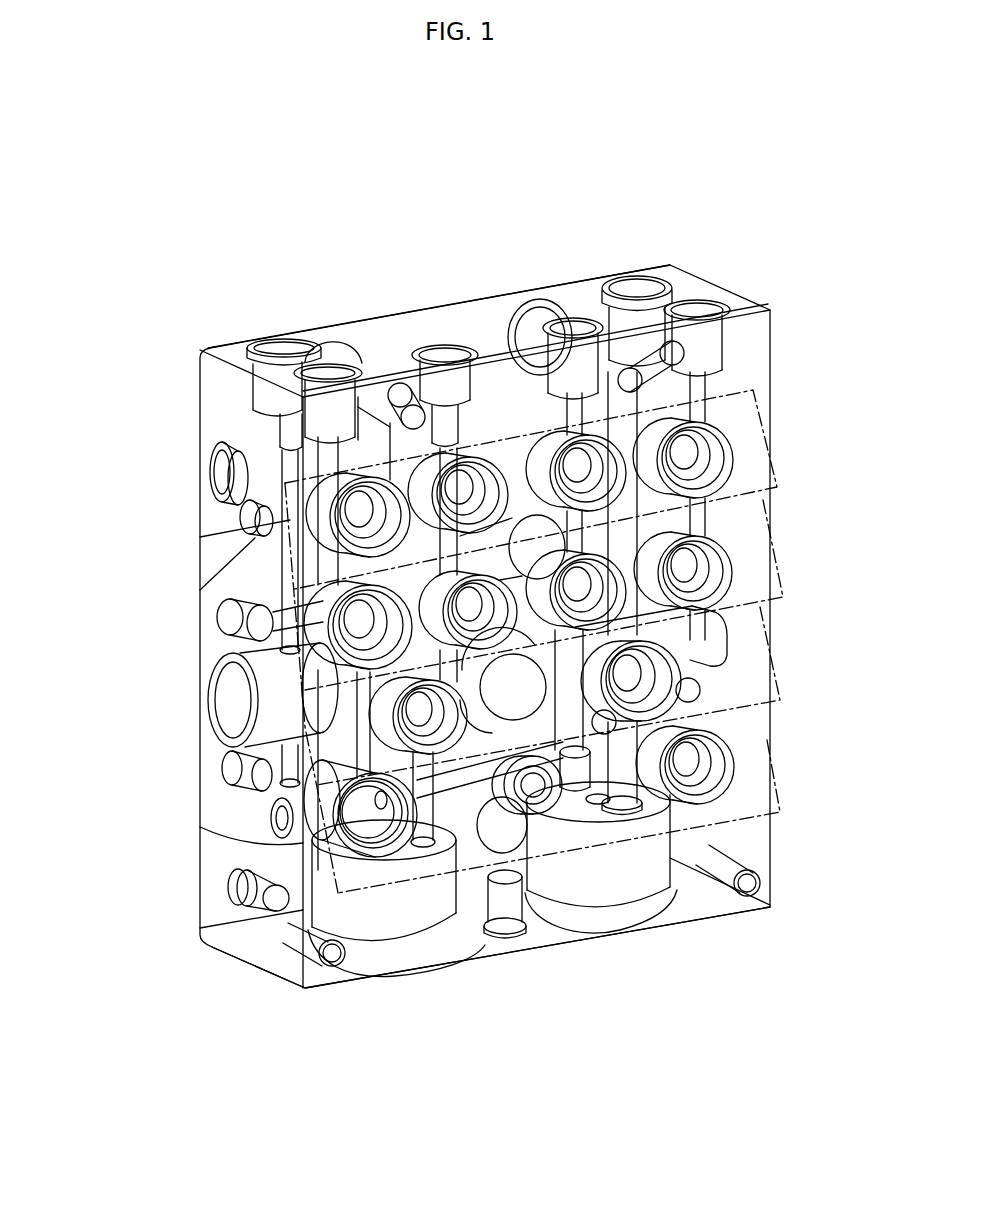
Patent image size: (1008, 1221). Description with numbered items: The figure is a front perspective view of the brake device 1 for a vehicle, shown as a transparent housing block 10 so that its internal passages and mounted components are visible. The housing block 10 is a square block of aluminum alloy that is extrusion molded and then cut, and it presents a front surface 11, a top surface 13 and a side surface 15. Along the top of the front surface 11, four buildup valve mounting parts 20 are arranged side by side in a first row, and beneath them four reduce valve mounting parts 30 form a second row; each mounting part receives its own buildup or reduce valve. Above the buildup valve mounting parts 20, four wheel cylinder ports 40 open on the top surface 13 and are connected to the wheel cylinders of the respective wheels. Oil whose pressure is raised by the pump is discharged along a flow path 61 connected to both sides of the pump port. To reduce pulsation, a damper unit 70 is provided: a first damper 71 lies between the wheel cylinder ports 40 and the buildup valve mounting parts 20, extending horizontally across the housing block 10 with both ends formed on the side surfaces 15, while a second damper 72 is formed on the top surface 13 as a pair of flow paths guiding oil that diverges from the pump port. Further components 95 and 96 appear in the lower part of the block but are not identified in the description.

The brake device 1 is at (816, 141).
The housing block 10 is at (197, 517).
The front surface 11 is at (477, 912).
The top surface 13 is at (487, 315).
The side surface 15 is at (262, 957).
The buildup valve mounting part 20 is at (707, 463).
The reduce valve mounting part 30 is at (703, 580).
The wheel cylinder port 40 is at (337, 372).
The flow path 61 is at (240, 688).
The damper unit 70 is at (183, 404).
The first damper 71 is at (215, 467).
The second damper 72 is at (265, 350).
The check valve 95 is at (693, 690).
The motor mount 96 is at (682, 790).